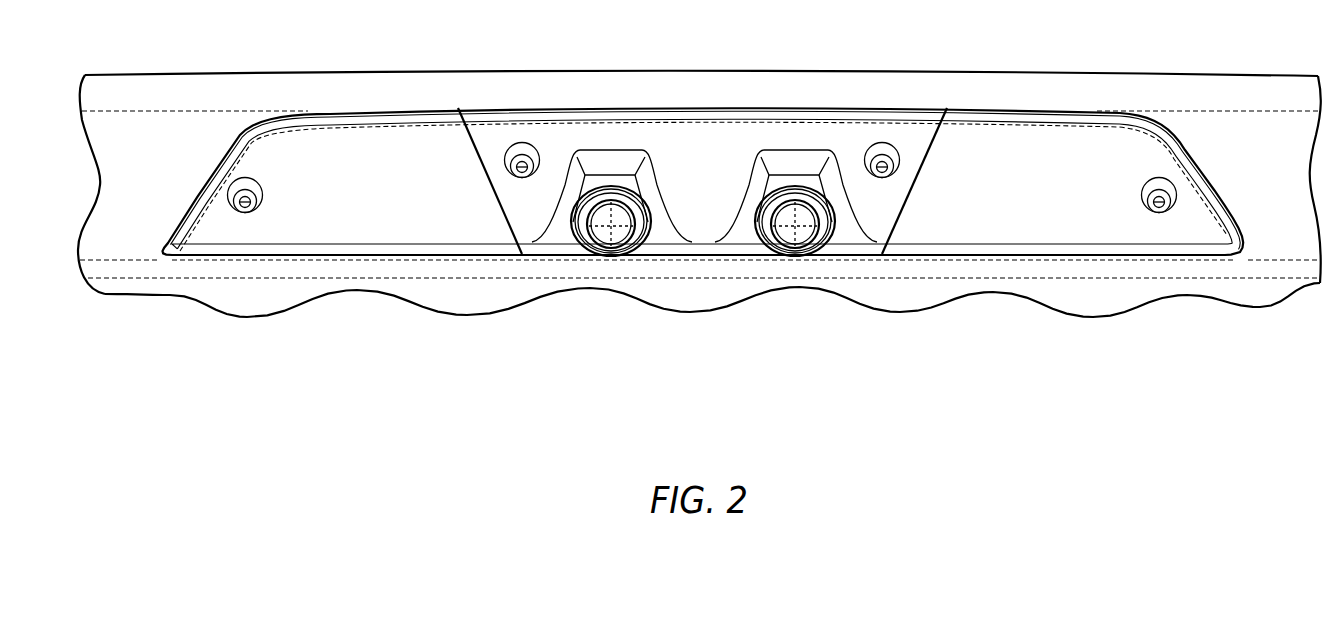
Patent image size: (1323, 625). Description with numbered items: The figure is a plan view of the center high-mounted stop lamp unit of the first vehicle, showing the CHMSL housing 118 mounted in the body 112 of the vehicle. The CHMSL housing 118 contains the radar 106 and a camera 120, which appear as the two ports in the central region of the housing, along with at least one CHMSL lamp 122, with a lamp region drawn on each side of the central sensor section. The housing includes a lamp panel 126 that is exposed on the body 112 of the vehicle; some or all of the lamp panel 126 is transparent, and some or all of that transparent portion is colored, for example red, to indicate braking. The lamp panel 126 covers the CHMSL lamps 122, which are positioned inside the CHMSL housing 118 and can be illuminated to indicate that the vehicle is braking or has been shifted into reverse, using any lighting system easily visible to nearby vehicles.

The body 112 is at (1252, 88).
The center high-mounted stop lamp housing 118 is at (907, 137).
The CHMSL lamp 122 is at (373, 215).
The lamp panel 126 is at (947, 217).
The radar 106 is at (595, 253).
The camera 120 is at (805, 253).